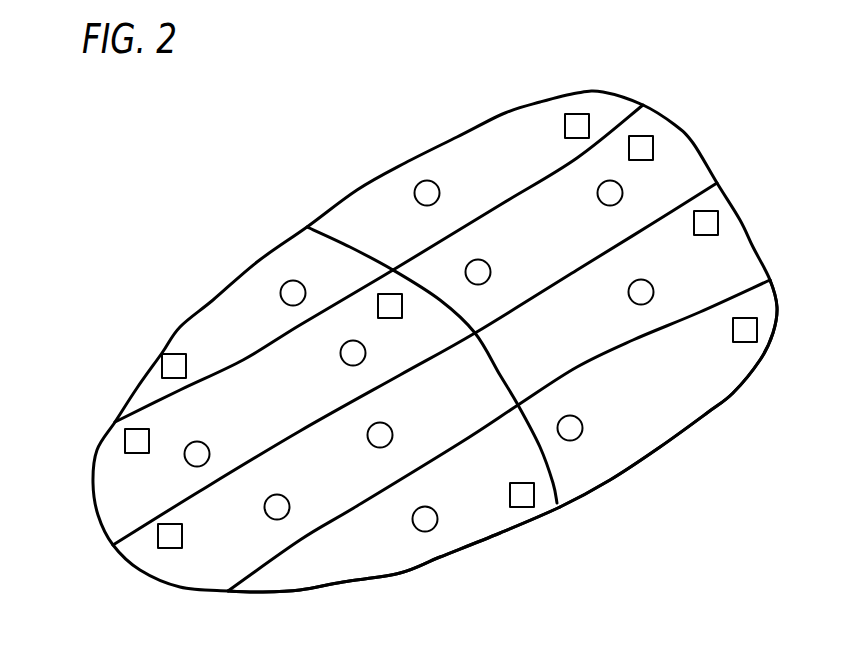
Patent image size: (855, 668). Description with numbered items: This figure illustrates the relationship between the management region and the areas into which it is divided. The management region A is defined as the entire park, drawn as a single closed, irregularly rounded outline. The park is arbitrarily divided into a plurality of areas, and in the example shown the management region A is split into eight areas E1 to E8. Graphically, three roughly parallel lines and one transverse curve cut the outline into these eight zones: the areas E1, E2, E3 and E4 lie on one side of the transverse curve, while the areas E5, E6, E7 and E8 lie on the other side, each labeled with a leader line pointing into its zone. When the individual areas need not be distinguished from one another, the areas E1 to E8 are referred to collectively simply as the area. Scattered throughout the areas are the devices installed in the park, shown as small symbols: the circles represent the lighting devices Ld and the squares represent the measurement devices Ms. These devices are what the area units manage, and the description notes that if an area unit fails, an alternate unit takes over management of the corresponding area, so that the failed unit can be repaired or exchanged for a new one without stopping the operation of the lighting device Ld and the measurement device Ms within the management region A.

The management region A is at (522, 100).
The area E1 is at (225, 307).
The area E2 is at (122, 477).
The area E3 is at (163, 565).
The area E4 is at (333, 570).
The area E5 is at (477, 143).
The area E6 is at (673, 152).
The area E7 is at (735, 255).
The area E8 is at (678, 403).
The lighting device Ld is at (283, 285).
The measurement device Ms is at (173, 362).